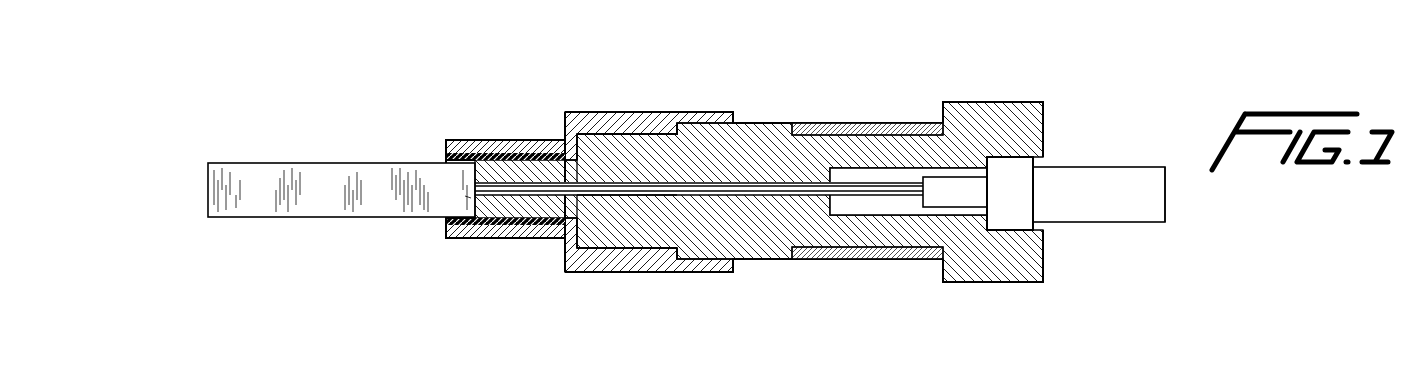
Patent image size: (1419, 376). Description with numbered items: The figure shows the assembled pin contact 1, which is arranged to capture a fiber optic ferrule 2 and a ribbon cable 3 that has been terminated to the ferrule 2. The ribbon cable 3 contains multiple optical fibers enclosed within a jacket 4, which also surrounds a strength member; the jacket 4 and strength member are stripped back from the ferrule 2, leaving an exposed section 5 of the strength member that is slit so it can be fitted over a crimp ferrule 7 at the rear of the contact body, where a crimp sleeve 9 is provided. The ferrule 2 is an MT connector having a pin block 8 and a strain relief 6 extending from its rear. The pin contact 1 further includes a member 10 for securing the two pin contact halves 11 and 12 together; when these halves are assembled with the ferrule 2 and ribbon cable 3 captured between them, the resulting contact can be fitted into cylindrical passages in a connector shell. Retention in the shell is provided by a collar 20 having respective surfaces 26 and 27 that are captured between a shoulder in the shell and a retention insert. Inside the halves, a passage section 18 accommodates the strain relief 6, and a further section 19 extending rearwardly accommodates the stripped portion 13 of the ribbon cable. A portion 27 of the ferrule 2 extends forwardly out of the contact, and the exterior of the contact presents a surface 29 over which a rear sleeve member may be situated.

The pin contact 1 is at (703, 200).
The fiber optic ferrule 2 is at (1072, 178).
The ribbon cable 3 is at (392, 190).
The jacket 4 is at (386, 170).
The section of the strength member 5 is at (497, 157).
The strain relief 6 is at (962, 201).
The crimp ferrule 7 is at (529, 170).
The pin block 8 is at (1018, 217).
The crimp sleeve 9 is at (530, 237).
The member for securing halves of the pin contact together 10 is at (897, 122).
The pin contact half 11 is at (724, 153).
The pin contact half 12 is at (717, 230).
The stripped portion of the fiber optic ribbon cable 13 is at (652, 190).
The passage section 18 is at (885, 208).
The passage section 19 is at (637, 200).
The collar 20 is at (1015, 263).
The surface of the collar 26 is at (1045, 128).
The surface of the collar 27 is at (946, 113).
The surface 29 is at (600, 135).